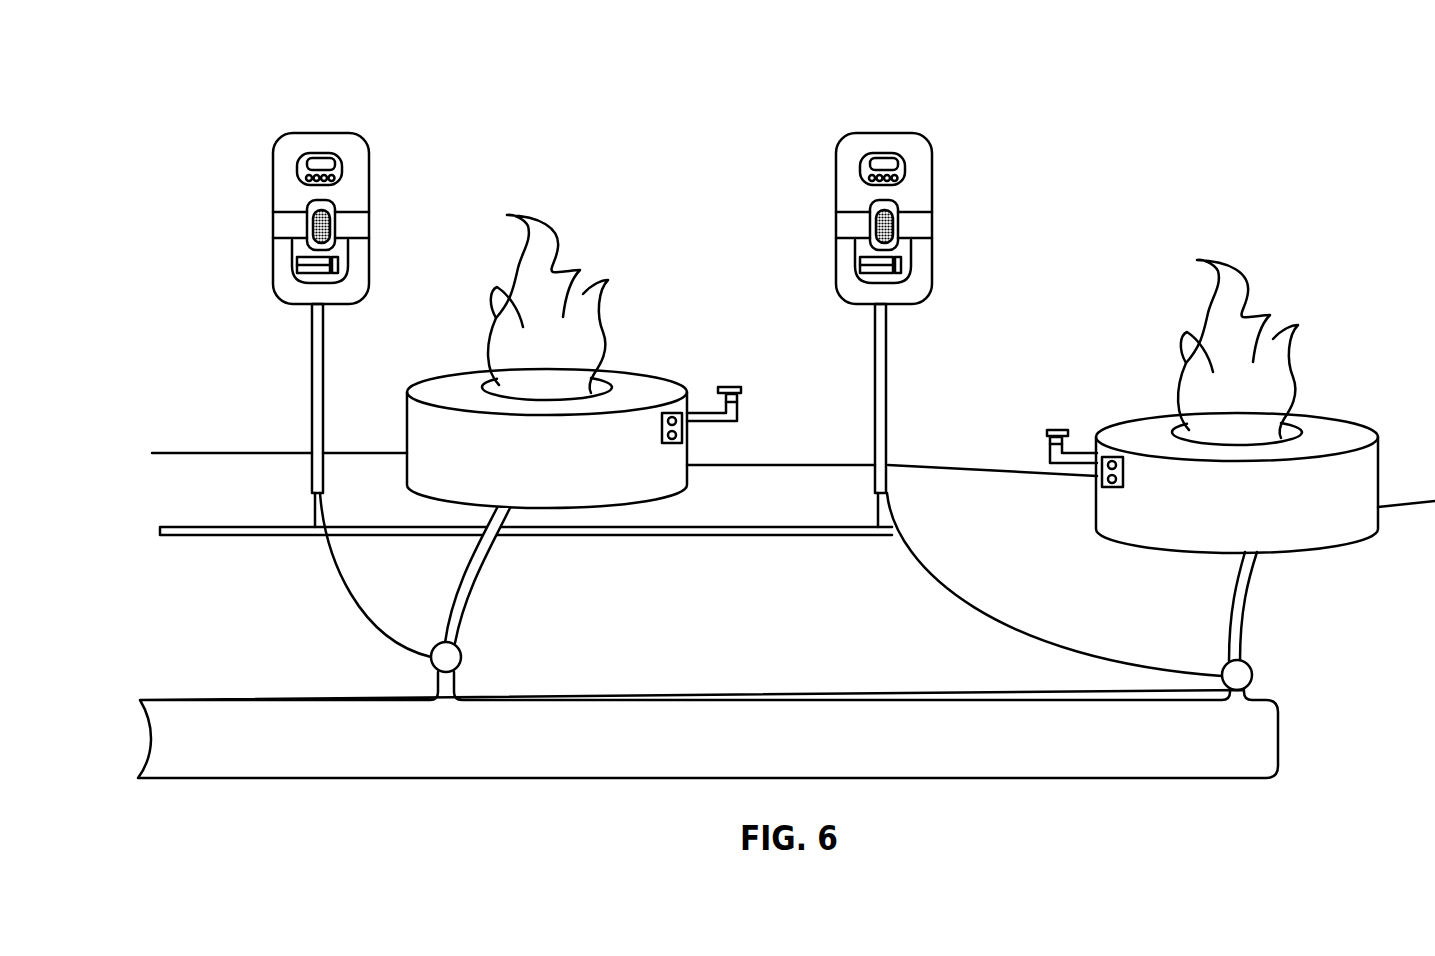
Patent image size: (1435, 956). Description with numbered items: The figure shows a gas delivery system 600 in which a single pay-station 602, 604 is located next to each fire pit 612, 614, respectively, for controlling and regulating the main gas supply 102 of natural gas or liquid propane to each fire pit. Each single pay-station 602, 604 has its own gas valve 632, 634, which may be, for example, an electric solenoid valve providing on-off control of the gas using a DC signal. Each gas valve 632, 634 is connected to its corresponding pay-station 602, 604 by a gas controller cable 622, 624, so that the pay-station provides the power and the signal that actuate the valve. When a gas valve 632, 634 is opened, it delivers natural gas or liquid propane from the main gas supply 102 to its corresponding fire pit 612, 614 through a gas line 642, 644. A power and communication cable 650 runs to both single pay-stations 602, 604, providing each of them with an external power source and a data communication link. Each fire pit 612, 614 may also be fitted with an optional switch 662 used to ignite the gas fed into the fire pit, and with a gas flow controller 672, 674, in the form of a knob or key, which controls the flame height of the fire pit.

The gas delivery system 600 is at (728, 81).
The single pay-station 602 is at (356, 141).
The single pay-station 604 is at (920, 139).
The fire pit station 612 is at (665, 386).
The fire pit station 614 is at (1338, 428).
The gas controller cable 622 is at (341, 591).
The gas controller cable 624 is at (1018, 628).
The gas valve 632 is at (459, 648).
The gas valve 634 is at (1258, 683).
The gas line 642 is at (453, 572).
The gas line 644 is at (1224, 614).
The power and communication cable 650 is at (252, 538).
The switch 662 is at (690, 442).
The gas flow controller 672 is at (729, 386).
The gas flow controller 674 is at (1047, 432).
The main gas supply 102 is at (708, 725).